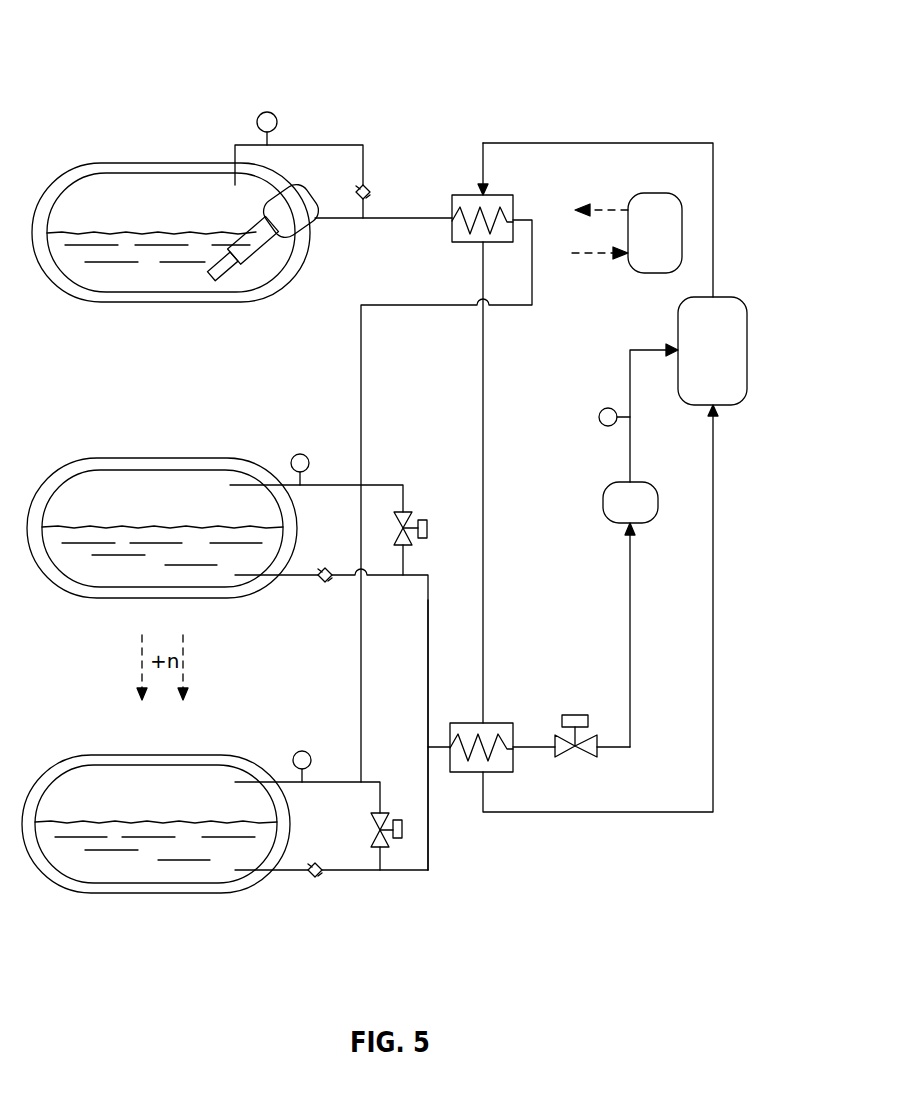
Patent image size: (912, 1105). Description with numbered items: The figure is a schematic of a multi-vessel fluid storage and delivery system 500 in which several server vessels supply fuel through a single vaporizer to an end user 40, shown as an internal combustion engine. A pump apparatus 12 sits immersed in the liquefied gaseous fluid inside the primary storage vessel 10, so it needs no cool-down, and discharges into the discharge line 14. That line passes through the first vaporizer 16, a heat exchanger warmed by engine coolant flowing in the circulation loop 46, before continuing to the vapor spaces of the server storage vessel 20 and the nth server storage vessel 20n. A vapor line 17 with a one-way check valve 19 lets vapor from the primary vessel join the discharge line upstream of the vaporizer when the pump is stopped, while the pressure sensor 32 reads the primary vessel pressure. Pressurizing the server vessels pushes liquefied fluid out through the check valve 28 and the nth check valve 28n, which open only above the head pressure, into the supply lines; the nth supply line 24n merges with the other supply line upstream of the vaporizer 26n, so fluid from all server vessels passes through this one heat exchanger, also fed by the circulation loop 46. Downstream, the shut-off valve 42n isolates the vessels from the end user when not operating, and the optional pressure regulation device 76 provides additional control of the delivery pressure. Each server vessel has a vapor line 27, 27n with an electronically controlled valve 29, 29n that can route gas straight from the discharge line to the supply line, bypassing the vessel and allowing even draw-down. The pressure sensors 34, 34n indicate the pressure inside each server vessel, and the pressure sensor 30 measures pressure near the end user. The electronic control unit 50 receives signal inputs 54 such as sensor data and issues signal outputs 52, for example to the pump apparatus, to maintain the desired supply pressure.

The multi-vessel fluid storage and delivery system 500 is at (48, 95).
The primary storage vessel 10 is at (85, 163).
The pump apparatus 12 is at (257, 227).
The pressure sensor 32 is at (264, 112).
The vapor line 17 is at (322, 144).
The one-way check valve 19 is at (368, 187).
The discharge line 14 is at (392, 222).
The first vaporizer 16 is at (496, 195).
The circulation loop 46 is at (715, 236).
The signal outputs 52 is at (588, 205).
The signal inputs 54 is at (597, 258).
The electronic control unit 50 is at (655, 233).
The end user 40 is at (712, 351).
The pressure sensor 30 is at (599, 417).
The pressure regulation device 76 is at (640, 545).
The server storage vessel 20 is at (80, 458).
The pressure sensor 34 is at (298, 454).
The vapor line 27 is at (404, 497).
The valve 29 is at (428, 532).
The check valve 28 is at (324, 582).
The nth server storage vessel 20n is at (77, 755).
The nth pressure sensor 34n is at (295, 752).
The nth vapor line 27n is at (380, 795).
The nth valve 29n is at (400, 840).
The nth check valve 28n is at (316, 878).
The nth supply line 24n is at (430, 838).
The vaporizer 26n is at (497, 723).
The shut-off valve 42n is at (575, 713).